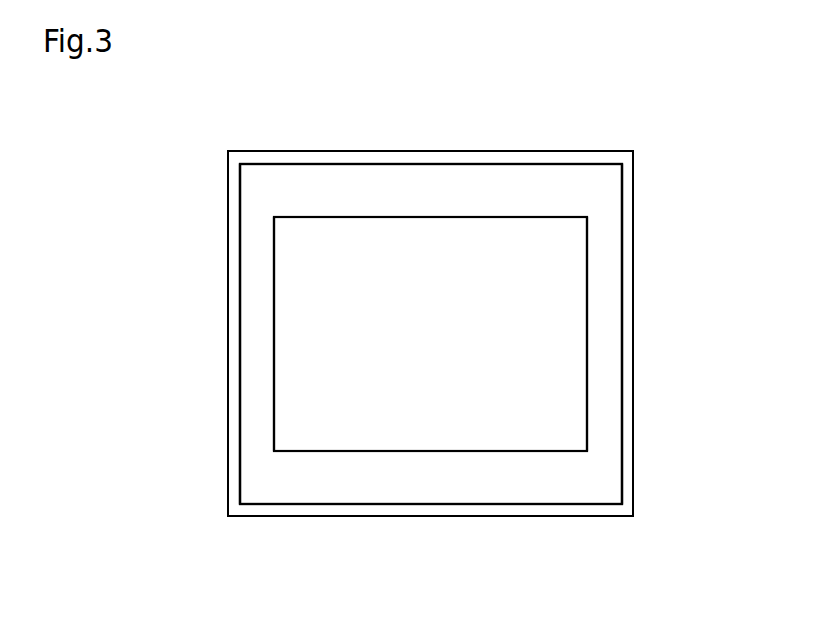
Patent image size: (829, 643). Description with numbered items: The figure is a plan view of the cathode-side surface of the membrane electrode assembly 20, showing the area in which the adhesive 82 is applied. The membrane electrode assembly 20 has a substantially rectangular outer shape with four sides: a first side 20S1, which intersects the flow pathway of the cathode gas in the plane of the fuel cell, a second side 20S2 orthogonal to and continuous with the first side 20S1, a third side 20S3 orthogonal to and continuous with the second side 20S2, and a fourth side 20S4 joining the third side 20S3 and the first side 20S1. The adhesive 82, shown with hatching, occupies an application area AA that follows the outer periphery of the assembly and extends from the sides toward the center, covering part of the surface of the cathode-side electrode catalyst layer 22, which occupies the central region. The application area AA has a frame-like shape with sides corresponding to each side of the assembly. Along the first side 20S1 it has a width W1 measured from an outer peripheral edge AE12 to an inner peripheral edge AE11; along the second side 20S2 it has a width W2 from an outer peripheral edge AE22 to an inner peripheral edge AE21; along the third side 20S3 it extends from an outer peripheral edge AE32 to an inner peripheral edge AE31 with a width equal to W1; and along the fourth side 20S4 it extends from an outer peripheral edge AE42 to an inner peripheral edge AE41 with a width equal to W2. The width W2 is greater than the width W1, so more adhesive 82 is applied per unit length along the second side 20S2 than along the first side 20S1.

The membrane electrode assembly 20 is at (606, 151).
The first side 20S1 is at (228, 225).
The second side 20S2 is at (250, 516).
The third side 20S3 is at (633, 225).
The fourth side 20S4 is at (252, 151).
The adhesive 82 is at (490, 187).
The cathode-side electrode catalyst layer 22 is at (445, 345).
The application area AA is at (445, 205).
The inner peripheral edge AE11 is at (274, 345).
The outer peripheral edge AE12 is at (240, 345).
The inner peripheral edge AE21 is at (430, 451).
The outer peripheral edge AE22 is at (413, 504).
The inner peripheral edge AE31 is at (587, 345).
The outer peripheral edge AE32 is at (622, 345).
The inner peripheral edge AE41 is at (430, 217).
The outer peripheral edge AE42 is at (323, 164).
The width W1 is at (293, 303).
The width W2 is at (531, 164).